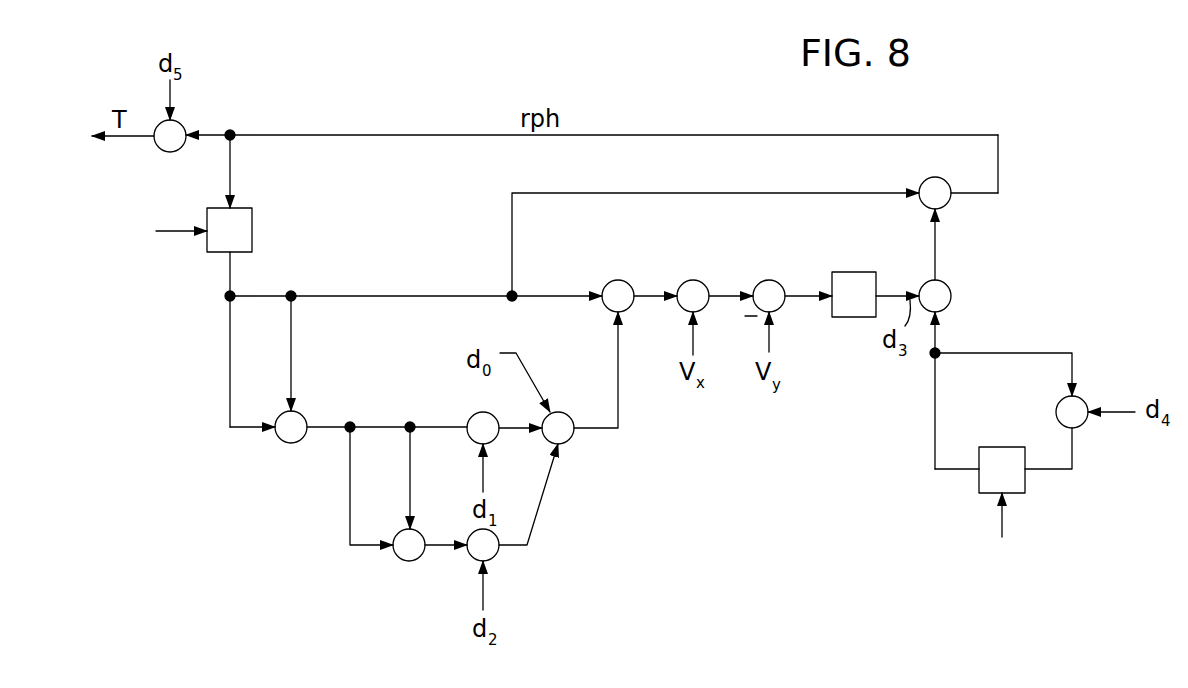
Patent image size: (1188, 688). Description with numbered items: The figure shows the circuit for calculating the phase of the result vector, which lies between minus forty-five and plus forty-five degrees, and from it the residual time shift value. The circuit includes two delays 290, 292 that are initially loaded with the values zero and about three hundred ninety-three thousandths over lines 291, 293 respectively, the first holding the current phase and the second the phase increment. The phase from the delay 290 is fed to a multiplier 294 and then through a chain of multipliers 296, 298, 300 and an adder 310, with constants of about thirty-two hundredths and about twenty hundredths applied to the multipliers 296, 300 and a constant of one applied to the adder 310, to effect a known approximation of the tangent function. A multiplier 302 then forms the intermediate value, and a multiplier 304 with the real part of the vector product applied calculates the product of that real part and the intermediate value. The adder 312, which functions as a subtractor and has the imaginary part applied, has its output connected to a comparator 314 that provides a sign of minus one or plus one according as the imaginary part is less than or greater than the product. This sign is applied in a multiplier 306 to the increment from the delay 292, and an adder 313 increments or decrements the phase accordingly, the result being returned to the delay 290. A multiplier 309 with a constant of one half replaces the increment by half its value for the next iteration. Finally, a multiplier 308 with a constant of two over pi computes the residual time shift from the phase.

The delay 290 is at (252, 218).
The line 291 is at (172, 231).
The delay 292 is at (1014, 447).
The line 293 is at (1004, 522).
The multiplier 294 is at (283, 443).
The multiplier 296 is at (473, 415).
The multiplier 298 is at (400, 560).
The multiplier 300 is at (497, 557).
The multiplier 302 is at (614, 280).
The multiplier 304 is at (700, 280).
The multiplier 306 is at (951, 296).
The multiplier 308 is at (162, 152).
The multiplier 309 is at (1058, 400).
The adder 310 is at (571, 444).
The adder 312 is at (776, 280).
The adder 313 is at (948, 205).
The comparator 314 is at (846, 272).